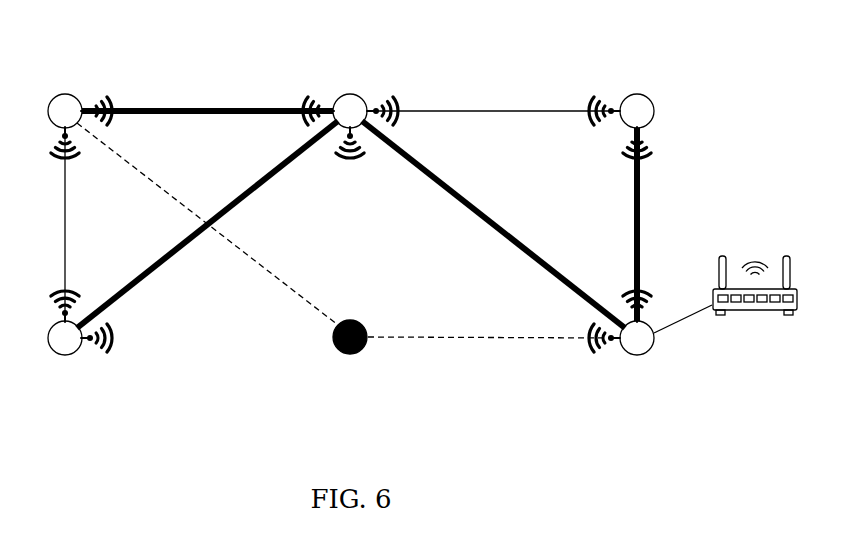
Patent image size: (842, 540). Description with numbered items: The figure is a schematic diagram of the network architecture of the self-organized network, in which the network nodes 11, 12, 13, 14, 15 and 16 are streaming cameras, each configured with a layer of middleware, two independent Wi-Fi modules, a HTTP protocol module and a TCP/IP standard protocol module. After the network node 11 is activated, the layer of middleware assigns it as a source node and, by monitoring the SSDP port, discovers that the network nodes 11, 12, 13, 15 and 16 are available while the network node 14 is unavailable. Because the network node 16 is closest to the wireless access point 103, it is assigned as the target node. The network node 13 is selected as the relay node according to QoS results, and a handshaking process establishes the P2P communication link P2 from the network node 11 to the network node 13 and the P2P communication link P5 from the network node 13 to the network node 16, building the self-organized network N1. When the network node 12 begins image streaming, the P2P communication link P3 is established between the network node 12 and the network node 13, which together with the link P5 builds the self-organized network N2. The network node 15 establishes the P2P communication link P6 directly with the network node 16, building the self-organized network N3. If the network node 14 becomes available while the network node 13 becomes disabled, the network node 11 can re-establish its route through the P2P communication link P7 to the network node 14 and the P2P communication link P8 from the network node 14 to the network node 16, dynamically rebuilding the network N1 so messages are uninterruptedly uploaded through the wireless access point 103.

The network node 11 is at (78, 94).
The network node 12 is at (78, 359).
The network node 13 is at (350, 94).
The network node 14 is at (349, 374).
The network node 15 is at (624, 94).
The network node 16 is at (624, 359).
The wireless access point 103 is at (755, 300).
The self-organized network N1 is at (212, 98).
The self-organized network N2 is at (260, 201).
The self-organized network N3 is at (653, 210).
The P2P communication link P2 is at (207, 128).
The P2P communication link P3 is at (207, 224).
The P2P communication link P5 is at (493, 224).
The P2P communication link P6 is at (619, 224).
The P2P communication link P7 is at (207, 224).
The P2P communication link P8 is at (494, 352).